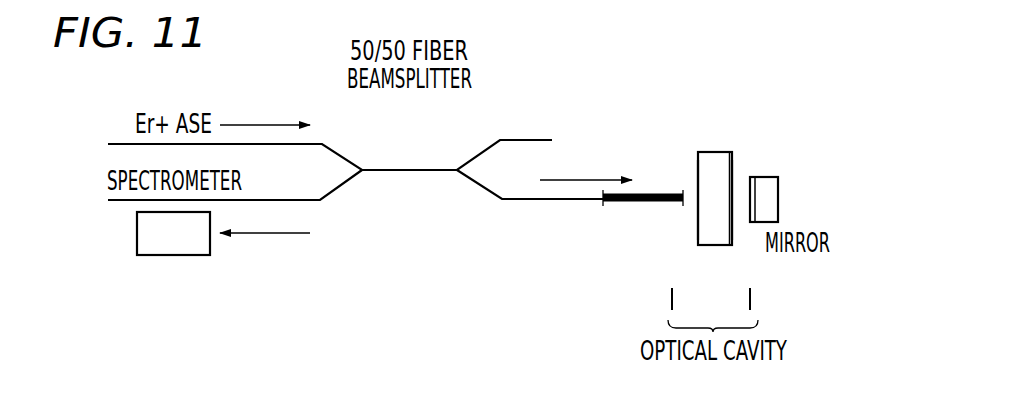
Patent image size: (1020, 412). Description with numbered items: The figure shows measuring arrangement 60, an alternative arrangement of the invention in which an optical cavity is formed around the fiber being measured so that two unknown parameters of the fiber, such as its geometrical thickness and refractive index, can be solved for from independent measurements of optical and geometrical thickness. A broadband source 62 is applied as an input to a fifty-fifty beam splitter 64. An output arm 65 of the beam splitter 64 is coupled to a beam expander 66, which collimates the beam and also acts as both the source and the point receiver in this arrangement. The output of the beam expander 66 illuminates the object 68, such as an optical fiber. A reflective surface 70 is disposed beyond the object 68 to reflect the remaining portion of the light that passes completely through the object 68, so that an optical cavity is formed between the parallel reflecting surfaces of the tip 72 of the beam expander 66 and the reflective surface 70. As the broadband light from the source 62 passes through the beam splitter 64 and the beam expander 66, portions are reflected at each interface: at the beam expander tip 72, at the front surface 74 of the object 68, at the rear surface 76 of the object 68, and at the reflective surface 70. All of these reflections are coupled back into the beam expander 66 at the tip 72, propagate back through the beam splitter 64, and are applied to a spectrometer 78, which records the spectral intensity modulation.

The measuring arrangement 60 is at (648, 80).
The broadband source 62 is at (245, 125).
The 50:50 beam splitter 64 is at (413, 158).
The output arm 65 is at (517, 201).
The beam expander 66 is at (618, 205).
The object 68 is at (717, 150).
The reflective surface 70 is at (752, 224).
The tip 72 is at (683, 202).
The front surface 74 is at (696, 162).
The rear surface 76 is at (735, 160).
The spectrometer 78 is at (137, 235).